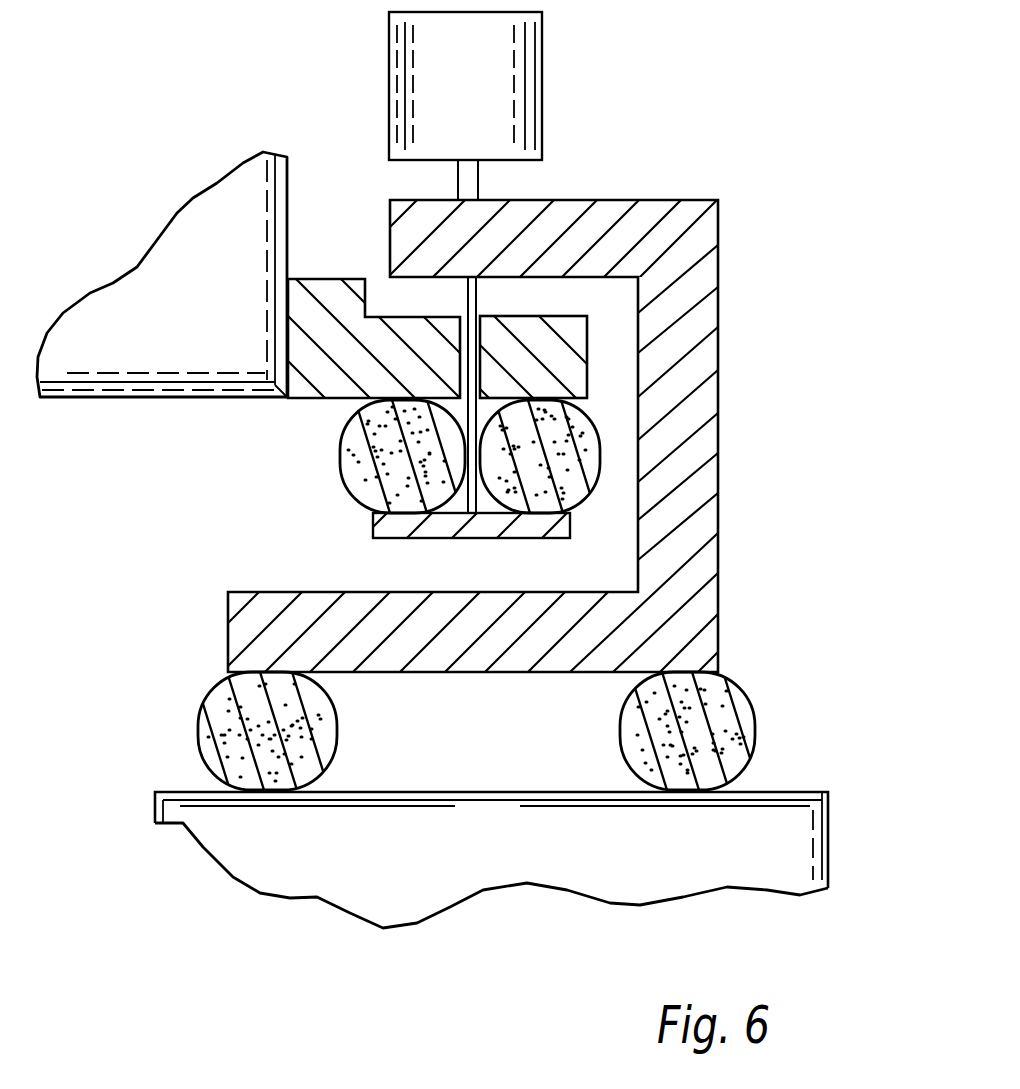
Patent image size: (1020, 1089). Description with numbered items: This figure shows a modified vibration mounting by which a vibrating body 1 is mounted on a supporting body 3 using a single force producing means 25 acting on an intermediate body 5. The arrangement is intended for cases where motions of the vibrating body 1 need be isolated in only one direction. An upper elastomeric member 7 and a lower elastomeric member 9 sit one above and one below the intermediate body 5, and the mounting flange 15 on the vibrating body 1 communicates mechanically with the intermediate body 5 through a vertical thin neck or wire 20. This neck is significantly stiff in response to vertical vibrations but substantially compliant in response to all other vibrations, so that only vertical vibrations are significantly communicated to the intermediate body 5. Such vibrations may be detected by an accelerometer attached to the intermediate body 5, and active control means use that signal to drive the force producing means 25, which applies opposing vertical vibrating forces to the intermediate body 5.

The vibrating body 1 is at (200, 328).
The supporting body 3 is at (470, 863).
The intermediate body 5 is at (706, 372).
The elastomeric member 7 is at (351, 453).
The elastomeric member 9 is at (635, 718).
The attachment ring 15 is at (315, 303).
The thin neck or wire 20 is at (476, 302).
The force producing means 25 is at (484, 95).